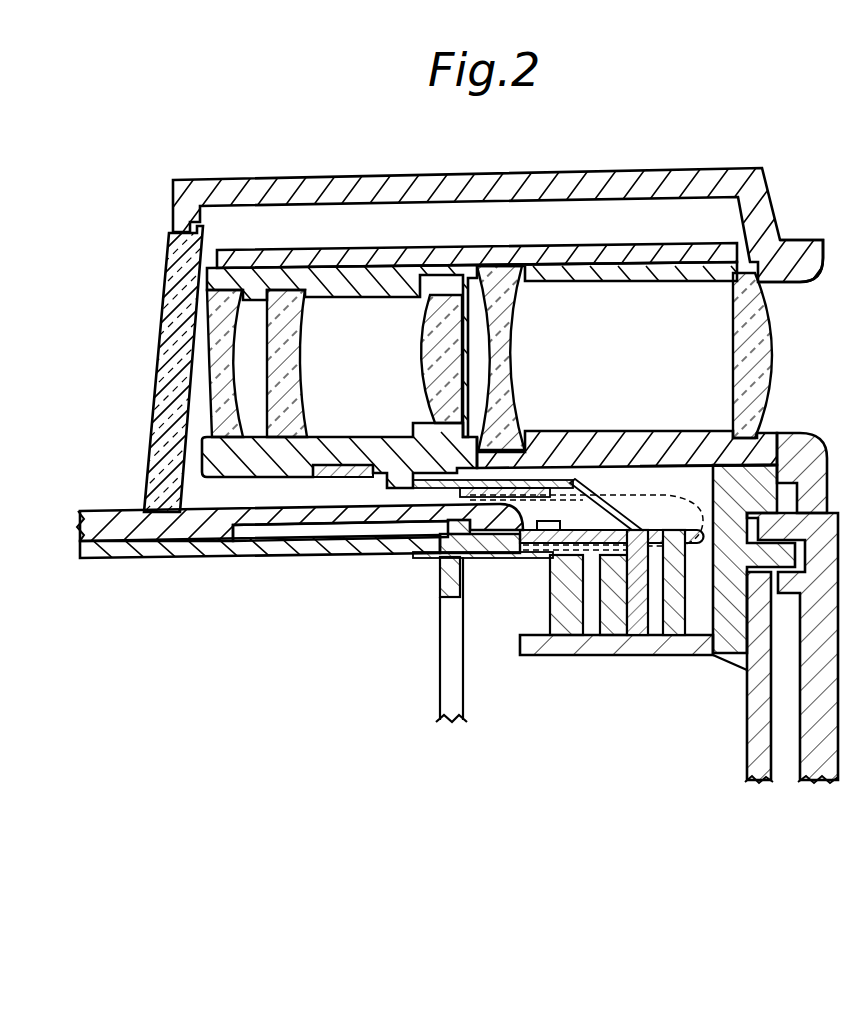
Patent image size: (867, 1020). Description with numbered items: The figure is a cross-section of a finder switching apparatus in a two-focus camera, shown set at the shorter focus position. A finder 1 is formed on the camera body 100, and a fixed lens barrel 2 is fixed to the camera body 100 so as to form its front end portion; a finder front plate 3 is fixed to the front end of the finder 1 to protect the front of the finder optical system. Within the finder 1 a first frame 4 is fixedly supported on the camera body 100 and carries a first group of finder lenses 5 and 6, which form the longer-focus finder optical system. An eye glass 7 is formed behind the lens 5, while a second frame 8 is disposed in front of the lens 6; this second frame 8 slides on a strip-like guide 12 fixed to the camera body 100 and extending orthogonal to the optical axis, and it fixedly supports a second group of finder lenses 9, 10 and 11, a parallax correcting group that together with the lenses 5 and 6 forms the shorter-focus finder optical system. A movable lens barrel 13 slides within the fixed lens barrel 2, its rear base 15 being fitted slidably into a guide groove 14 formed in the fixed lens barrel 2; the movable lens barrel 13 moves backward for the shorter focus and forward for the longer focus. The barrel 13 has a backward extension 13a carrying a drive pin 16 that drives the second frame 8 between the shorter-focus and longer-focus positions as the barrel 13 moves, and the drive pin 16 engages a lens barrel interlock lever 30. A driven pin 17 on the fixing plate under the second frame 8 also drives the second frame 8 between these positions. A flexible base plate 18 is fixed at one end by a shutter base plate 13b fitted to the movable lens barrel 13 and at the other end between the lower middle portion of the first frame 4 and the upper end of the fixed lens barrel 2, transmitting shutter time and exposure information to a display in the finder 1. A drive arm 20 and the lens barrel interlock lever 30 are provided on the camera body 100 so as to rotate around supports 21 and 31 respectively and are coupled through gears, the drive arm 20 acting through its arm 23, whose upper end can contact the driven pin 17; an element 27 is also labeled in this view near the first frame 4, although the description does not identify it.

The finder 1 is at (476, 199).
The fixed lens barrel 2 is at (329, 530).
The finder front plate 3 is at (170, 345).
The first frame 4 is at (602, 250).
The finder lens 5 is at (768, 340).
The finder lens 6 is at (506, 350).
The eye glass 7 is at (774, 289).
The second frame 8 is at (384, 272).
The finder lens 9 is at (432, 342).
The finder lens 10 is at (292, 293).
The finder lens 11 is at (229, 293).
The strip-like guide 12 is at (330, 470).
The movable lens barrel 13 is at (160, 560).
The backward extension 13a is at (493, 540).
The shutter base plate 13b is at (438, 582).
The guide groove 14 is at (287, 532).
The rear base 15 is at (432, 557).
The drive pin 16 is at (547, 531).
The driven pin 17 is at (492, 435).
The flexible base plate 18 is at (668, 495).
The drive arm 20 is at (558, 459).
The support 21 is at (656, 627).
The arm 23 is at (613, 493).
The guide 27 is at (687, 480).
The lens barrel interlock lever 30 is at (646, 656).
The support 31 is at (594, 630).
The camera body 100 is at (693, 575).